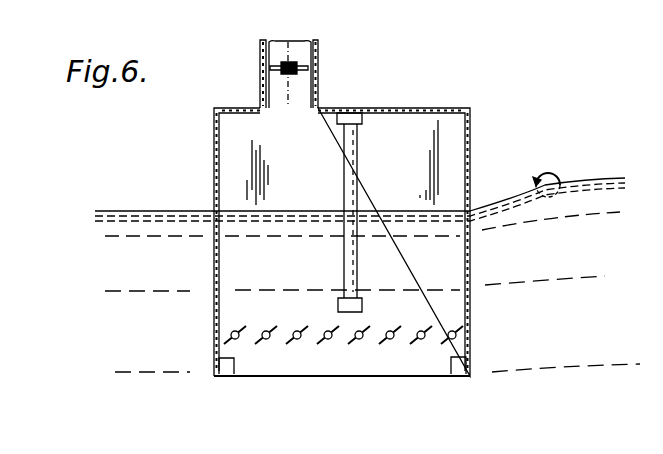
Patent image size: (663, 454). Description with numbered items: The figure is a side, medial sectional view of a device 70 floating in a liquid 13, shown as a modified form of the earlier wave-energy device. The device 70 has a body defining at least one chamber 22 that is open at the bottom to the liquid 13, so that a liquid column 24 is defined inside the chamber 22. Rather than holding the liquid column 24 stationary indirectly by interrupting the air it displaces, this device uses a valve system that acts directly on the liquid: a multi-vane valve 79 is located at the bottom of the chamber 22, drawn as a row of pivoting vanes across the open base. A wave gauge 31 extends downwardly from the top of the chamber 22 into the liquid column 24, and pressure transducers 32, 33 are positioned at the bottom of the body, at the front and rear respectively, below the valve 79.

The device 70 is at (468, 97).
The chamber 22 is at (414, 140).
The liquid 13 is at (141, 238).
The liquid column 24 is at (291, 240).
The wave gauge 31 is at (364, 304).
The pressure transducer 32 is at (462, 366).
The pressure transducer 33 is at (215, 374).
The multi-vane valve 79 is at (289, 347).